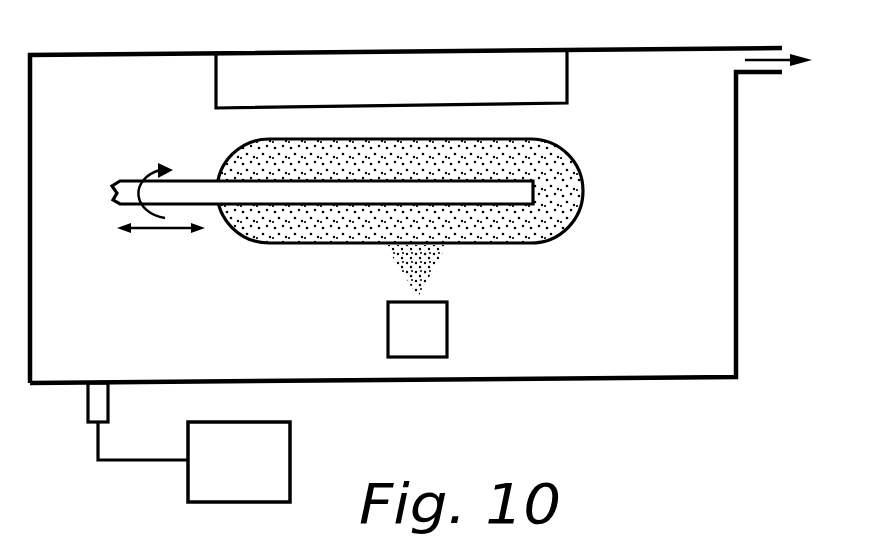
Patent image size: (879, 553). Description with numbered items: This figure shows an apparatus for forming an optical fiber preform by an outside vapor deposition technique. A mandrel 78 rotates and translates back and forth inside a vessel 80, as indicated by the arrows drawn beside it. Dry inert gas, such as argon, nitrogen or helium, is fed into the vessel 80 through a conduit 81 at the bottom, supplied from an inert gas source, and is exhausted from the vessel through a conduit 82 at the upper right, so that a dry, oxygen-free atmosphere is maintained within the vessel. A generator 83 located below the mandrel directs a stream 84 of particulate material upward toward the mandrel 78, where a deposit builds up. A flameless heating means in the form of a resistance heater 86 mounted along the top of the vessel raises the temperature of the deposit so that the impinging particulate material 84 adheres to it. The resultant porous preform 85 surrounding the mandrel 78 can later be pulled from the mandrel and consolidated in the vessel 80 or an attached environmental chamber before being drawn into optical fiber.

The mandrel 78 is at (193, 181).
The vessel 80 is at (148, 55).
The conduit 81 is at (87, 407).
The conduit 82 is at (767, 72).
The generator 83 is at (447, 329).
The stream of particulate material 84 is at (413, 266).
The porous preform 85 is at (533, 244).
The resistance heater 86 is at (370, 65).